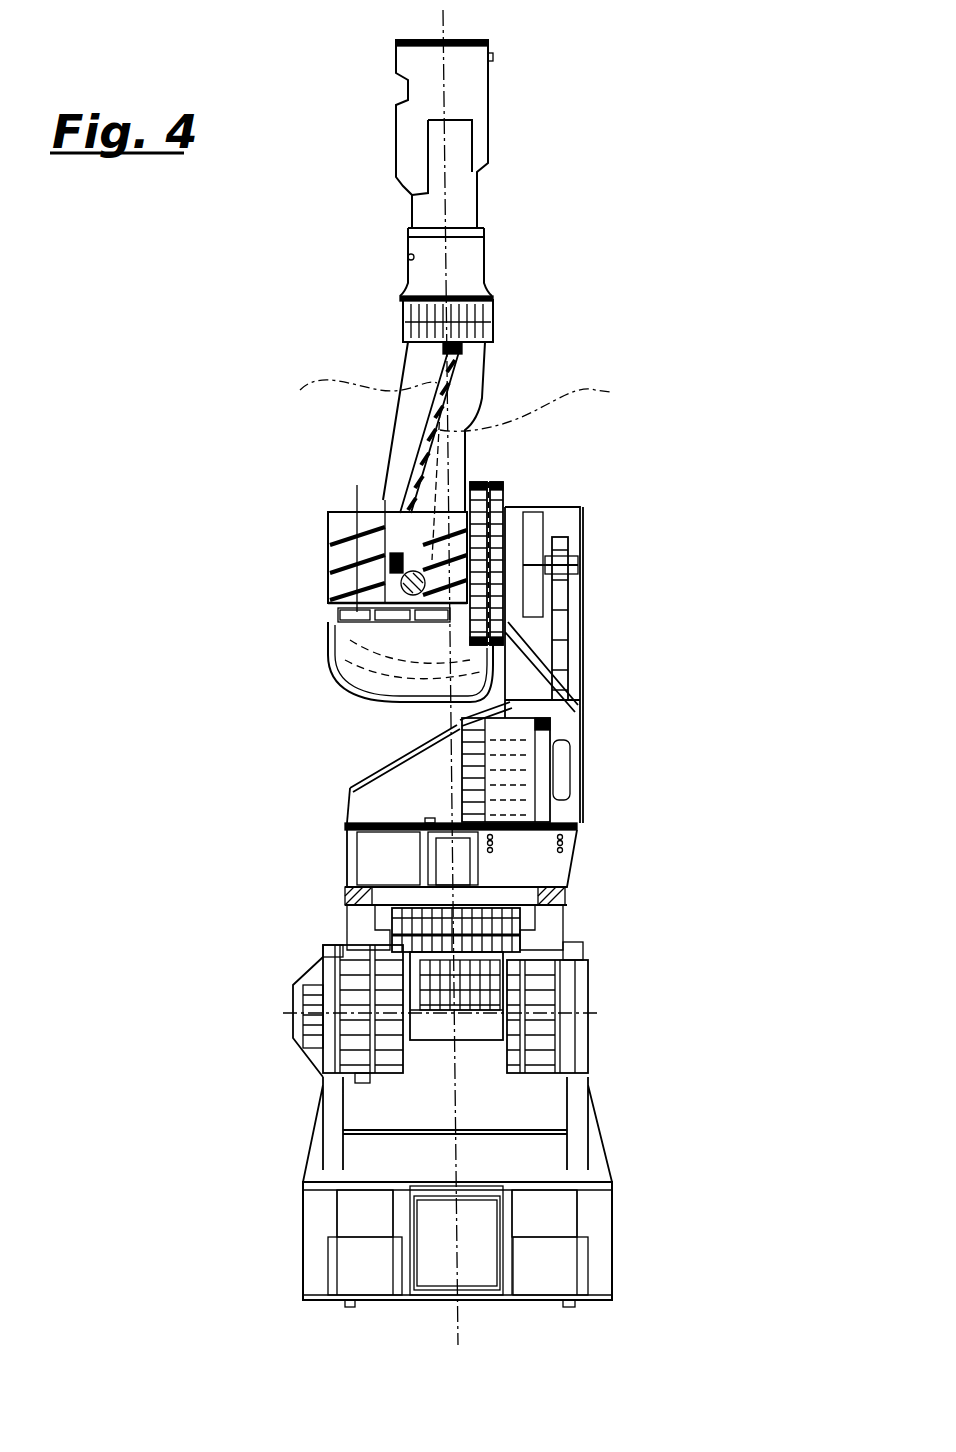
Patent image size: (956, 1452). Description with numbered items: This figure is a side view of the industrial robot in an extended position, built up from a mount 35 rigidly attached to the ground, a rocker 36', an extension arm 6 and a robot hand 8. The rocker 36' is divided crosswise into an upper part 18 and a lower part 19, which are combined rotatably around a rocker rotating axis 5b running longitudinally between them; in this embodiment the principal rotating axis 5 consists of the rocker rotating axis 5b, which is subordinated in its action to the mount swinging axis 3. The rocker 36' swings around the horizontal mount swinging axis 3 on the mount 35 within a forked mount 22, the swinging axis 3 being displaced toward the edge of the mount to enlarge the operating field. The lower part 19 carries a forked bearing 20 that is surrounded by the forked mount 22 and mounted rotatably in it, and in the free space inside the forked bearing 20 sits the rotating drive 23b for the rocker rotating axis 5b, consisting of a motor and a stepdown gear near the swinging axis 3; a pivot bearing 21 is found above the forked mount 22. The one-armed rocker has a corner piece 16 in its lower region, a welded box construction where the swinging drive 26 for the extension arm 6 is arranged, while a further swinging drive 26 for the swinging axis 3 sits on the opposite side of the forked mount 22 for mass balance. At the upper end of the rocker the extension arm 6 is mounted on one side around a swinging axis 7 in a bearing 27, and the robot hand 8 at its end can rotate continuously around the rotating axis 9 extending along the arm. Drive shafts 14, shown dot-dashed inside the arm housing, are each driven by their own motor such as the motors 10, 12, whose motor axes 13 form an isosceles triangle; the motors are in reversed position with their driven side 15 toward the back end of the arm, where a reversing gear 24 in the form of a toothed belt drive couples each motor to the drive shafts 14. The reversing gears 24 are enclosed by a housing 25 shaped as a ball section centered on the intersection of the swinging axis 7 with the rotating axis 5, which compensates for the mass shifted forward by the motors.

The mount swinging axis 3 is at (283, 1013).
The principal rotating axis 5 is at (450, 718).
The rocker rotating axis 5b is at (457, 862).
The extension arm 6 is at (485, 365).
The swinging axis 7 is at (578, 563).
The robot hand 8 is at (475, 100).
The rotating axis 9 is at (478, 263).
The motor 10 is at (440, 484).
The motor 12 is at (328, 550).
The motor axis 13 is at (357, 505).
The drive shaft 14 is at (455, 400).
The driven side 15 is at (310, 599).
The corner piece 16 is at (366, 763).
The upper part 18 is at (375, 806).
The lower part 19 is at (353, 922).
The forked bearing 20 is at (570, 1057).
The pivot bearing 21 is at (563, 898).
The forked mount 22 is at (580, 1142).
The rotating drive 23b is at (467, 987).
The reversing gear 24 is at (395, 672).
The housing 25 is at (388, 649).
The swinging drive 26 is at (537, 795).
The bearing 27 is at (507, 497).
The mount 35 is at (612, 1225).
The rocker 36' is at (604, 665).